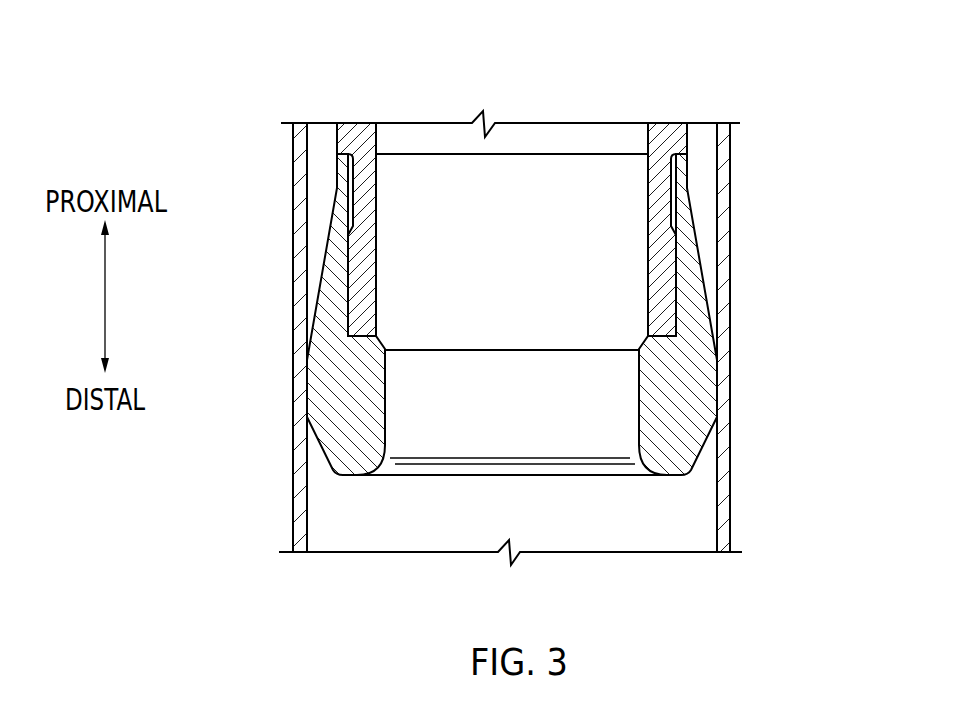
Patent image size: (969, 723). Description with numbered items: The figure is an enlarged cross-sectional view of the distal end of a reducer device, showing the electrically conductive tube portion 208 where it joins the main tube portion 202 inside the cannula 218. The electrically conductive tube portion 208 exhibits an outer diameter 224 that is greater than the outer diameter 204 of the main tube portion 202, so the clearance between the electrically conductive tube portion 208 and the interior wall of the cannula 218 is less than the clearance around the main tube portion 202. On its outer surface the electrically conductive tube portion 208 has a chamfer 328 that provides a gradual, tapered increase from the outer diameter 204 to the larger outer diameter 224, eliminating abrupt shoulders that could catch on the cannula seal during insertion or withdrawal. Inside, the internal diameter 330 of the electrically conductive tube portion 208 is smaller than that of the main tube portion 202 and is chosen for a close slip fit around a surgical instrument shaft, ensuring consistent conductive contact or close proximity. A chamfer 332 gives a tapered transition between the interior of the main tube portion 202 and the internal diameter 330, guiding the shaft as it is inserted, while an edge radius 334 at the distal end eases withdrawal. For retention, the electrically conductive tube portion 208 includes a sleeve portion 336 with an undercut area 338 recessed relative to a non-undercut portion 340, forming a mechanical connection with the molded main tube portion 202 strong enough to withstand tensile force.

The electrically conductive tube portion 208 is at (764, 96).
The main tube portion 202 is at (567, 135).
The outer diameter of the main tube portion 204 is at (687, 121).
The cannula 218 is at (730, 323).
The outer diameter of the electrically conductive tube portion 224 is at (718, 560).
The chamfer 328 is at (698, 263).
The internal diameter 330 is at (387, 440).
The chamfer 332 is at (383, 346).
The edge radius 334 is at (640, 468).
The sleeve portion 336 is at (325, 206).
The undercut area 338 is at (348, 270).
The non-undercut portion 340 is at (355, 173).